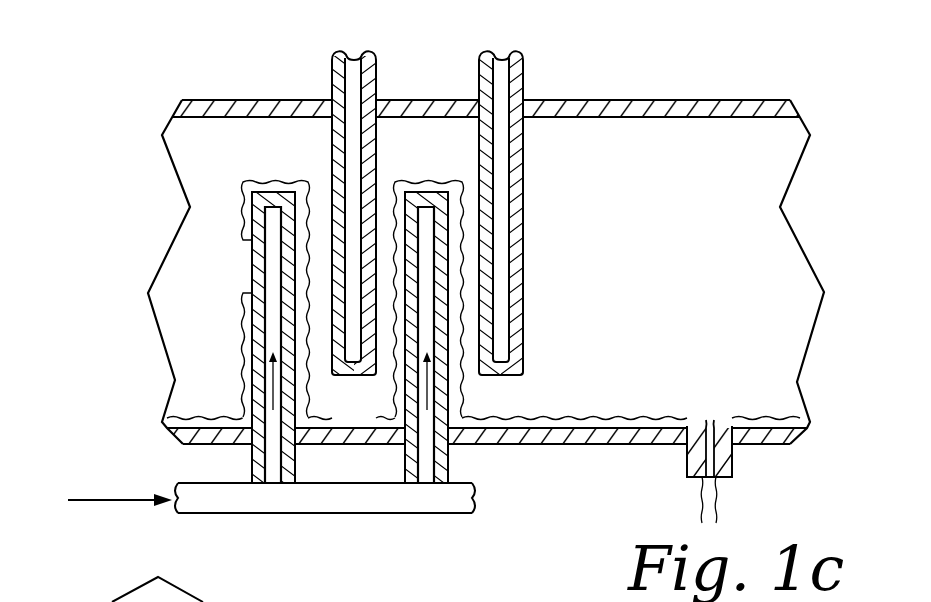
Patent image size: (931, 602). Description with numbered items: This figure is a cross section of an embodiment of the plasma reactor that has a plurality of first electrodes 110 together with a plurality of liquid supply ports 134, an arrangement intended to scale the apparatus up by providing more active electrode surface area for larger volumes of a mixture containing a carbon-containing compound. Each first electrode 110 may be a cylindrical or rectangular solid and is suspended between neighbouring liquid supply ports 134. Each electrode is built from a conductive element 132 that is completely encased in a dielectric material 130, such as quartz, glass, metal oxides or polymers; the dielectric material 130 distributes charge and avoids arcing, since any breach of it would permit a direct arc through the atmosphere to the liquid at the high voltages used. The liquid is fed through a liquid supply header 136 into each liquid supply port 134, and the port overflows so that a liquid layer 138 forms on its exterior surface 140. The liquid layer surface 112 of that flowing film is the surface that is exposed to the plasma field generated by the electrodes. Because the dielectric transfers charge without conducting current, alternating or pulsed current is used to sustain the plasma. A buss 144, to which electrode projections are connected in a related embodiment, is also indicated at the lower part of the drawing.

The first electrode 110 is at (349, 46).
The liquid layer surface 112 is at (463, 301).
The dielectric material 130 is at (525, 193).
The conductive element 132 is at (505, 232).
The liquid supply port 134 is at (228, 323).
The liquid supply header 136 is at (436, 513).
The liquid layer 138 is at (240, 210).
The exterior surface 140 is at (250, 269).
The buss 144 is at (250, 597).